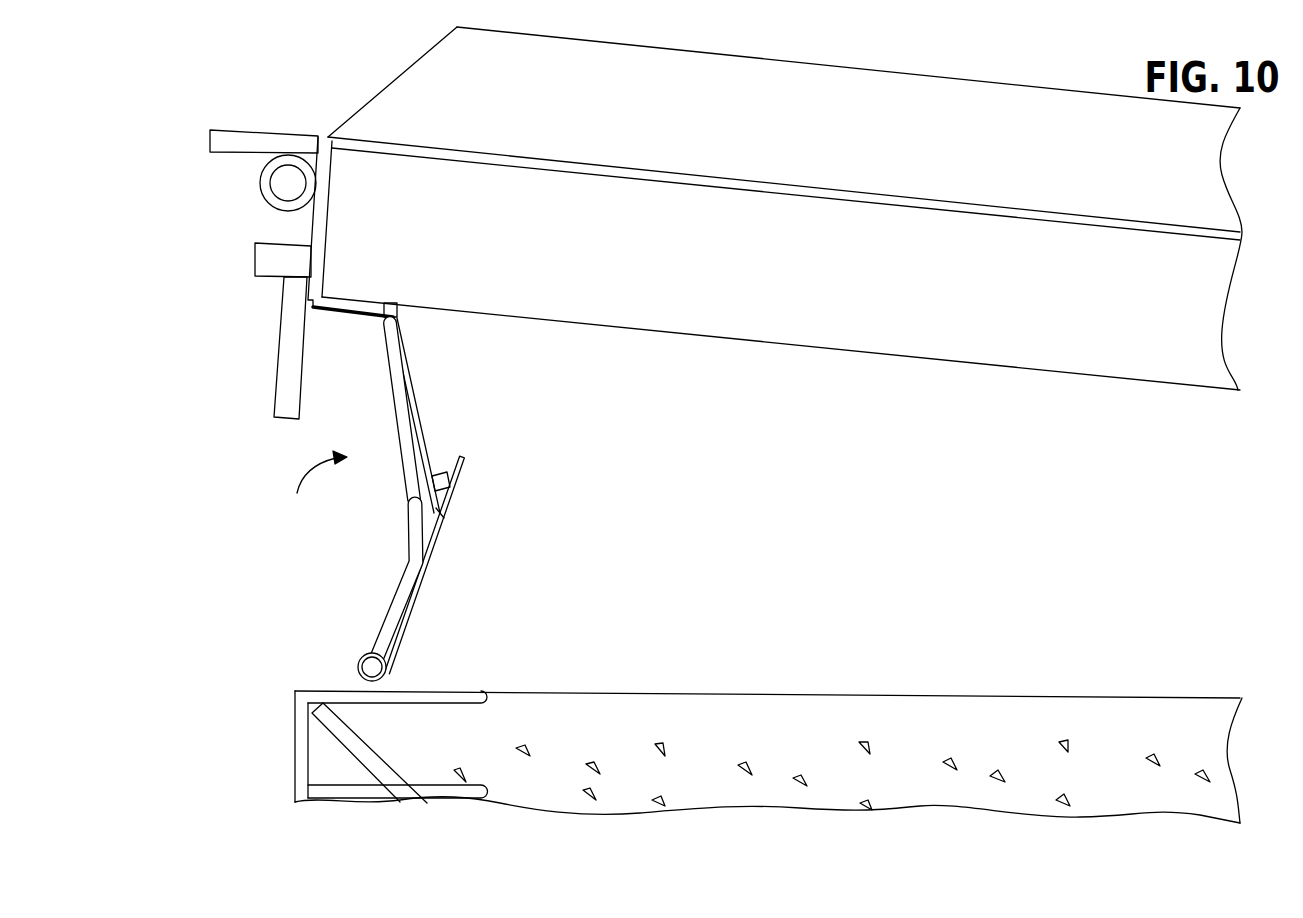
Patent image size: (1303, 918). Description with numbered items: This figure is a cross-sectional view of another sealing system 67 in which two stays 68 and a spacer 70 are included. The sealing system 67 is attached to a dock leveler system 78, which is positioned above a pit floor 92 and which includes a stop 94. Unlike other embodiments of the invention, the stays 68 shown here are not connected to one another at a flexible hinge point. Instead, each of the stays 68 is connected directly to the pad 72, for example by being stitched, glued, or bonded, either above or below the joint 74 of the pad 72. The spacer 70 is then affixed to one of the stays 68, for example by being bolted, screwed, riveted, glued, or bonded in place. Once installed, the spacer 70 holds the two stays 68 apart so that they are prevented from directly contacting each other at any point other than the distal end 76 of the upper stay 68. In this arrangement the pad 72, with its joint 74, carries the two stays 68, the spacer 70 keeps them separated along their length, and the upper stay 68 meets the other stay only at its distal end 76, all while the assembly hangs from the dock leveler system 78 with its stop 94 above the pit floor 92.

The sealing system 67 is at (315, 488).
The stays 68 is at (407, 377).
The spacer 70 is at (437, 473).
The pad 72 is at (388, 396).
The joint 74 is at (408, 502).
The distal end 76 is at (443, 515).
The dock leveler system 78 is at (840, 352).
The pit floor 92 is at (943, 698).
The stop 94 is at (279, 362).